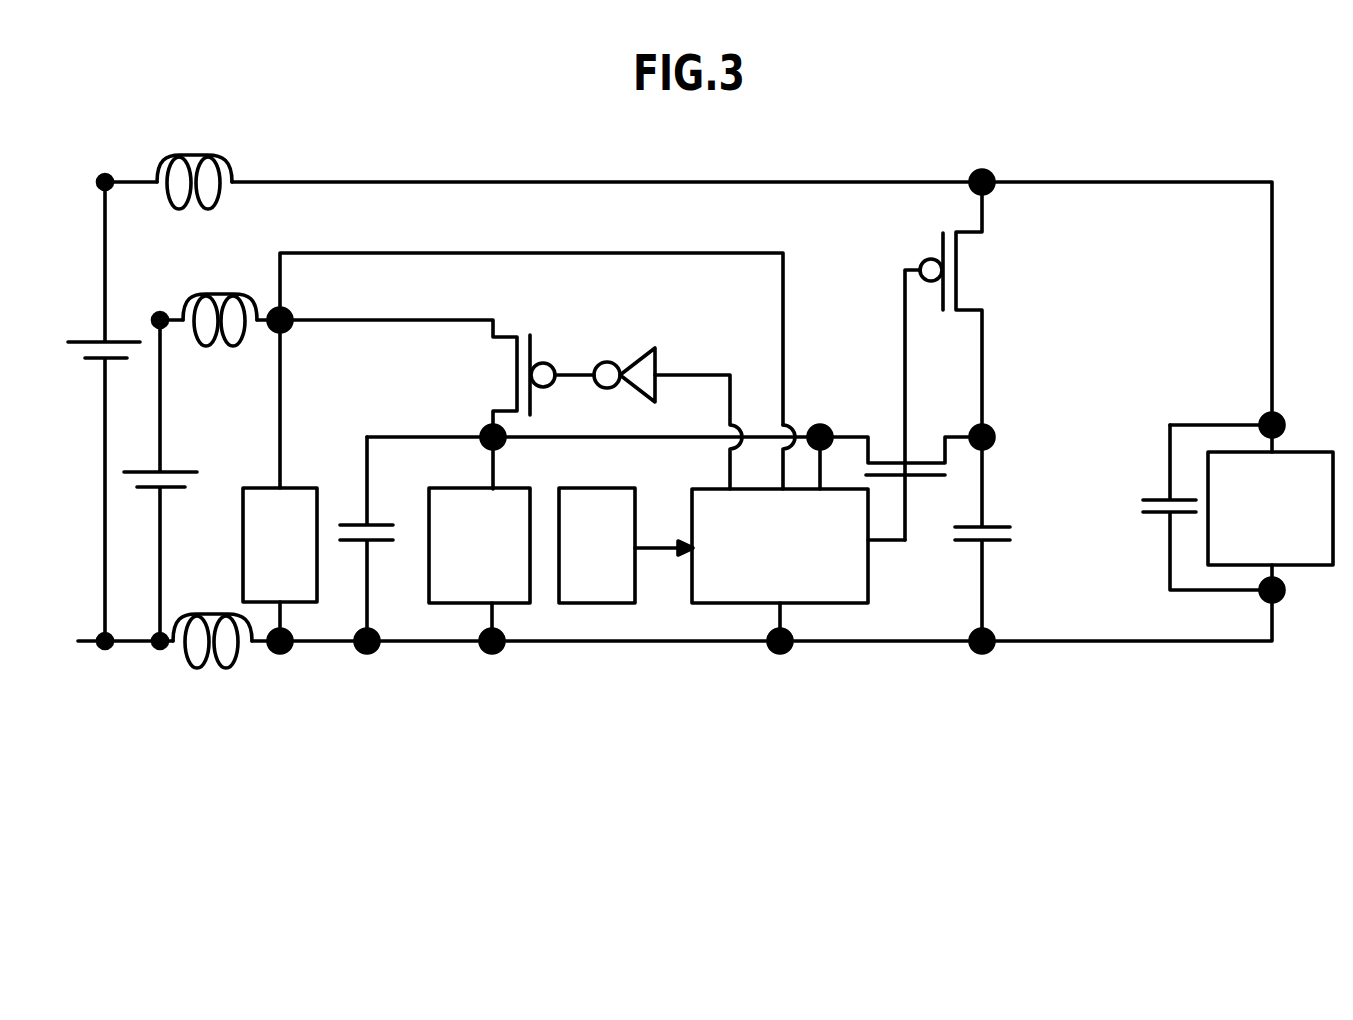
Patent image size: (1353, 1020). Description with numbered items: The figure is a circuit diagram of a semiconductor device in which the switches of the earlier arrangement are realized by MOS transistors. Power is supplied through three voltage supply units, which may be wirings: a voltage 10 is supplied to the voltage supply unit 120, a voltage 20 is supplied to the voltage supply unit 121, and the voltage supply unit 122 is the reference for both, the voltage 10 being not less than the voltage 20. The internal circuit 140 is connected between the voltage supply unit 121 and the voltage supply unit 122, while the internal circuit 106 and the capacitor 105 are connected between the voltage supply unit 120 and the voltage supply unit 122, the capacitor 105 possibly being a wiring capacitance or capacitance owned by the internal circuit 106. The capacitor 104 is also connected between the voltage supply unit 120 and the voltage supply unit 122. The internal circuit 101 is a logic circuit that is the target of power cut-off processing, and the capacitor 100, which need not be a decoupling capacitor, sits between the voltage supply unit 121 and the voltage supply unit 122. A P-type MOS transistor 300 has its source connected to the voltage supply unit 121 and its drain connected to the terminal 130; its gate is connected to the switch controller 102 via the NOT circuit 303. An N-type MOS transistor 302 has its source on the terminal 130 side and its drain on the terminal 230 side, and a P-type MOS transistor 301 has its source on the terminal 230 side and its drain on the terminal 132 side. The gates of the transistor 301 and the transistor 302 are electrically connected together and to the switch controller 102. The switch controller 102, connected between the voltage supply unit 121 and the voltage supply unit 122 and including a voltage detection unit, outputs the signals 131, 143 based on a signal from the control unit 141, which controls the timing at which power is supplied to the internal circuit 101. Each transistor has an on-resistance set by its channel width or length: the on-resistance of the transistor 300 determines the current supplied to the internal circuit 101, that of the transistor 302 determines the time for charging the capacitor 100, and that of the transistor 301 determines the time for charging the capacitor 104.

The voltage 10 is at (117, 343).
The voltage 20 is at (187, 470).
The capacitor 100 is at (352, 527).
The internal circuit 101 is at (445, 603).
The switch controller 102 is at (812, 603).
The capacitor 104 is at (997, 527).
The capacitor 105 is at (1158, 514).
The internal circuit 106 is at (1222, 453).
The voltage supply unit 120 is at (510, 182).
The voltage supply unit 121 is at (355, 320).
The voltage supply unit 122 is at (715, 641).
The terminal 130 is at (488, 430).
The signal 131 is at (882, 542).
The terminal 132 is at (990, 192).
The internal circuit 140 is at (308, 603).
The control unit 141 is at (570, 603).
The signal 143 is at (698, 375).
The terminal 230 is at (992, 427).
The P-type MOS transistor 300 is at (533, 335).
The P-type MOS transistor 301 is at (960, 255).
The N-type MOS transistor 302 is at (899, 462).
The NOT circuit 303 is at (660, 345).